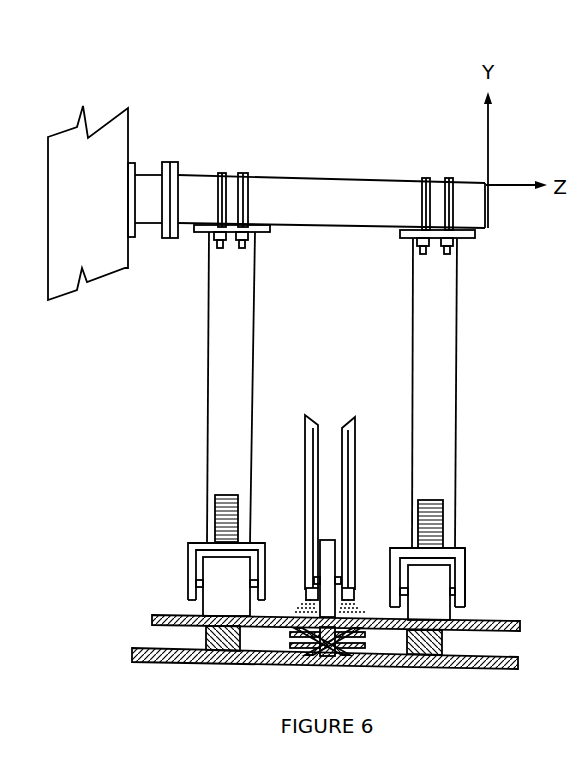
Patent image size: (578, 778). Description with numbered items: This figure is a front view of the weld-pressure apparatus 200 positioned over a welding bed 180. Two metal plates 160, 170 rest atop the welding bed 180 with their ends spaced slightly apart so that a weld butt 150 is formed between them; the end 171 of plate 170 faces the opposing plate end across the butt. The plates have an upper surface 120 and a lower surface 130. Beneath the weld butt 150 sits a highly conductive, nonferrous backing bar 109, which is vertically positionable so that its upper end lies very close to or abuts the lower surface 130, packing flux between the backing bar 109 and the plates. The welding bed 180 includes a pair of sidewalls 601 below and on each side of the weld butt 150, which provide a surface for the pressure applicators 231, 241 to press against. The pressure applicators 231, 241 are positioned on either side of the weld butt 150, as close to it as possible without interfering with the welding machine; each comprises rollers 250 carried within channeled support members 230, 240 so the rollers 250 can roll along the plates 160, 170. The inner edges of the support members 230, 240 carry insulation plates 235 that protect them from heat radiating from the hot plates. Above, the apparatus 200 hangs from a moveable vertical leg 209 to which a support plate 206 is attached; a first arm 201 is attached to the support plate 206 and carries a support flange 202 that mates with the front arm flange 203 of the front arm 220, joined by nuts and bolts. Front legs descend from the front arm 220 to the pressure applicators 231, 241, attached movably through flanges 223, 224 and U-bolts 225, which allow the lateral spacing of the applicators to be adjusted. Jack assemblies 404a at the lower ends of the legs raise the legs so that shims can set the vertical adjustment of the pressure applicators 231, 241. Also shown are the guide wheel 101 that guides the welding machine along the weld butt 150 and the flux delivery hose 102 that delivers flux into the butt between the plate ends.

The apparatus 200 is at (308, 84).
The moveable vertical leg 209 is at (113, 115).
The support plate 206 is at (133, 162).
The first arm 201 is at (150, 207).
The front arm flange 203 is at (174, 238).
The support flange 202 is at (165, 160).
The front arm 220 is at (338, 180).
The U-bolts 225 is at (222, 173).
The flange 223 is at (270, 232).
The flange 224 is at (398, 230).
The coil 404a is at (227, 497).
The channeled support member 230 is at (190, 541).
The channeled support member 240 is at (467, 550).
The rollers 250 is at (418, 600).
The insulation plates 235 is at (265, 543).
The pressure applicator 241 is at (483, 568).
The guide wheel 101 is at (372, 461).
The flux delivery hose 102 is at (307, 595).
The weld butt 150 is at (347, 610).
The metal plate 160 is at (500, 620).
The welding bed 180 is at (512, 670).
The sidewalls 601 is at (220, 643).
The backing bar 109 is at (303, 640).
The end 171 is at (345, 652).
The pressure applicator 231 is at (162, 542).
The upper surface 120 is at (166, 593).
The metal plate 170 is at (156, 614).
The lower surface 130 is at (156, 639).